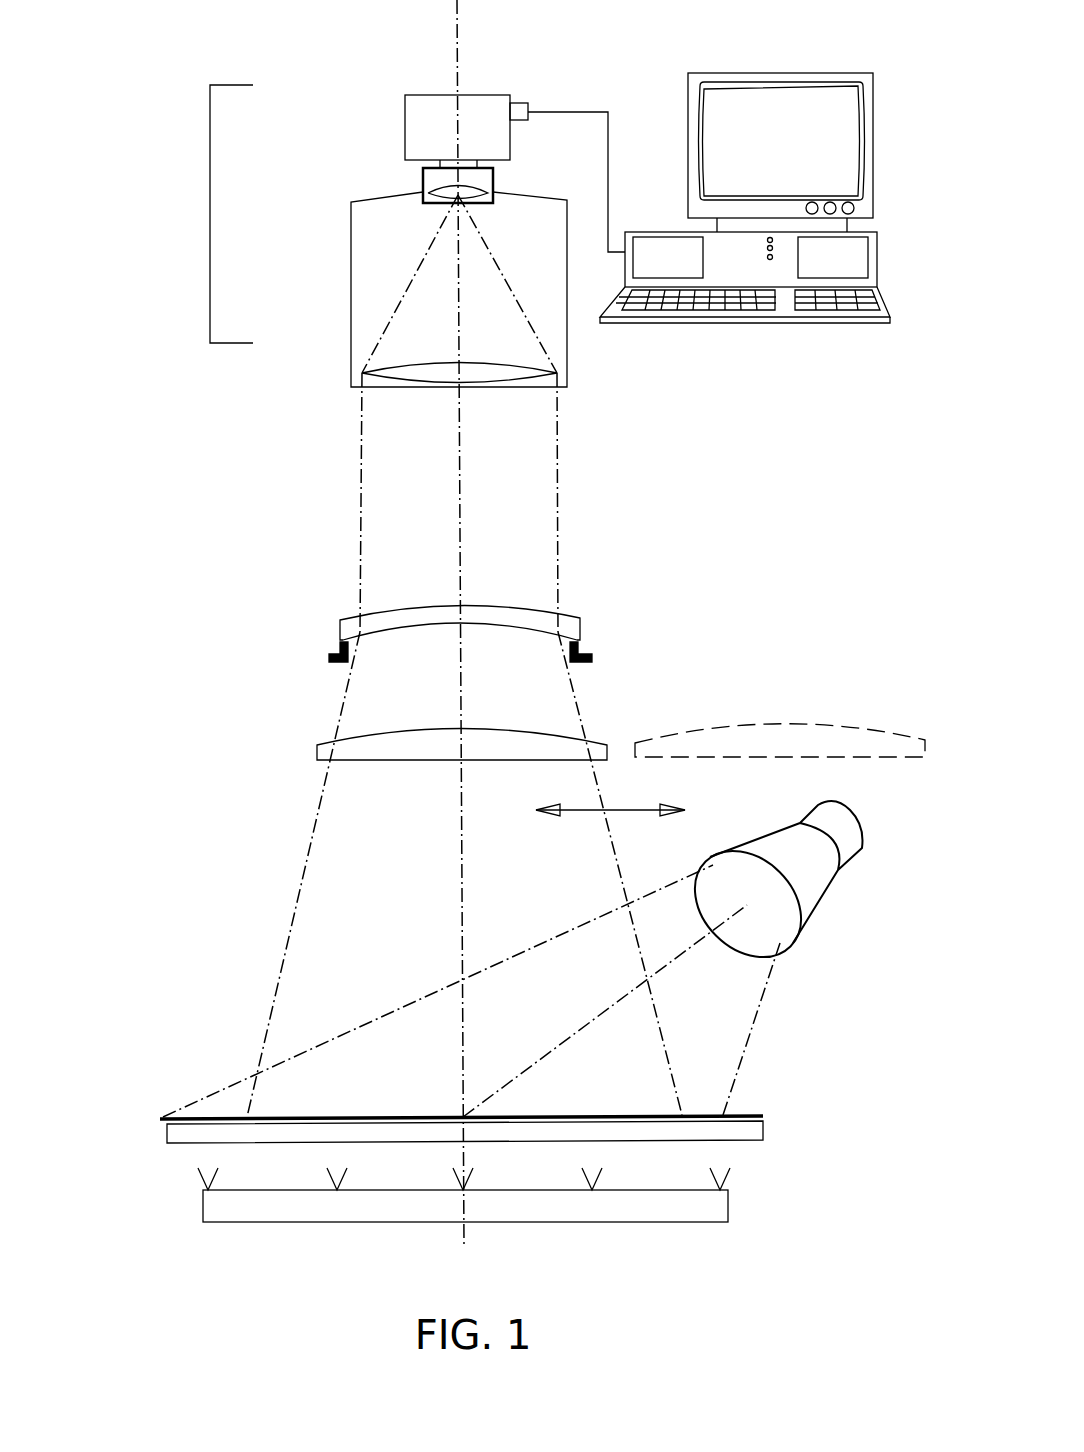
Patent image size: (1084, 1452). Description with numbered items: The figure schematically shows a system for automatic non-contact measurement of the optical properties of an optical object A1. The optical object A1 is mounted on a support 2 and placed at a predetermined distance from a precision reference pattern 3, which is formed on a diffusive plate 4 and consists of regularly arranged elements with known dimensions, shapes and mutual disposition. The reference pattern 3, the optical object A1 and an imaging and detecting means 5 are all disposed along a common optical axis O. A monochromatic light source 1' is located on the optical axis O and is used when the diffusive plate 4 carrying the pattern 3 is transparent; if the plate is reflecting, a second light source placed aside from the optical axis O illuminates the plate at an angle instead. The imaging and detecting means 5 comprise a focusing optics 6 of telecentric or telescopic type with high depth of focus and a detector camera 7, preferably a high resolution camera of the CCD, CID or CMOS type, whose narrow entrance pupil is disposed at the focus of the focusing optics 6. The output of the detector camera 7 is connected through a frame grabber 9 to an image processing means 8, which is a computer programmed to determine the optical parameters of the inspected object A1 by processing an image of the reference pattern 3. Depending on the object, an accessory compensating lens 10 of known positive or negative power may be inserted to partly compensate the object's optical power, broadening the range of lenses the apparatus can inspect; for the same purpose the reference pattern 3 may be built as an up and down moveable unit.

The monochromatic light source 1' is at (534, 1184).
The support 2 is at (327, 662).
The precision reference pattern 3 is at (200, 1117).
The diffusive plate 4 is at (188, 1132).
The imaging and detecting means 5 is at (217, 214).
The focusing optics 6 is at (362, 310).
The detector camera 7 is at (418, 130).
The image processing means 8 is at (725, 262).
The frame grabber 9 is at (657, 245).
The compensating lens 10 is at (370, 750).
The optical axis O is at (461, 548).
The optical object A1 is at (570, 628).